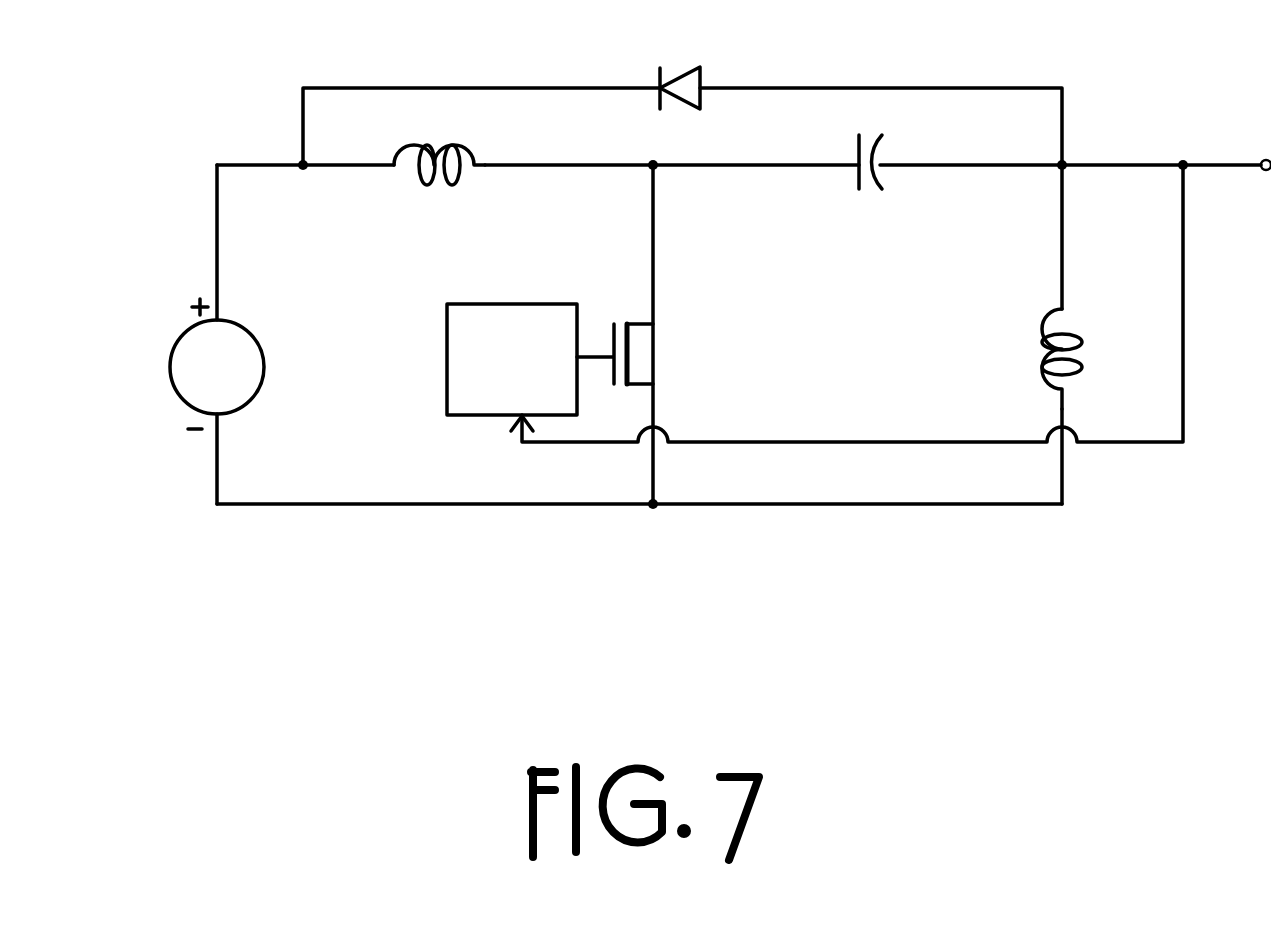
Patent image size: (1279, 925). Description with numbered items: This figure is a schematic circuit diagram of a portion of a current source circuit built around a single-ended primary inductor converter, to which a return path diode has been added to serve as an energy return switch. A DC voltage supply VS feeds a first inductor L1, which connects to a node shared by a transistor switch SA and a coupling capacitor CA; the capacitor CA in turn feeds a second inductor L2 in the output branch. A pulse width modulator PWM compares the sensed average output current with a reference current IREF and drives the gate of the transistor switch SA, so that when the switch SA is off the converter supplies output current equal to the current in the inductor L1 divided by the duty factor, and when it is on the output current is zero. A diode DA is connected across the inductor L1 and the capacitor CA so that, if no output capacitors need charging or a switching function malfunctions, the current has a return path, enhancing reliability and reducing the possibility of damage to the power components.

The DC voltage supply VS is at (193, 364).
The inductor L1 is at (439, 190).
The return path diode DA is at (683, 63).
The capacitor CA is at (874, 193).
The inductor L2 is at (1038, 359).
The transistor switch SA is at (640, 361).
The pulse width modulator PWM is at (512, 359).
The reference current IREF is at (445, 342).